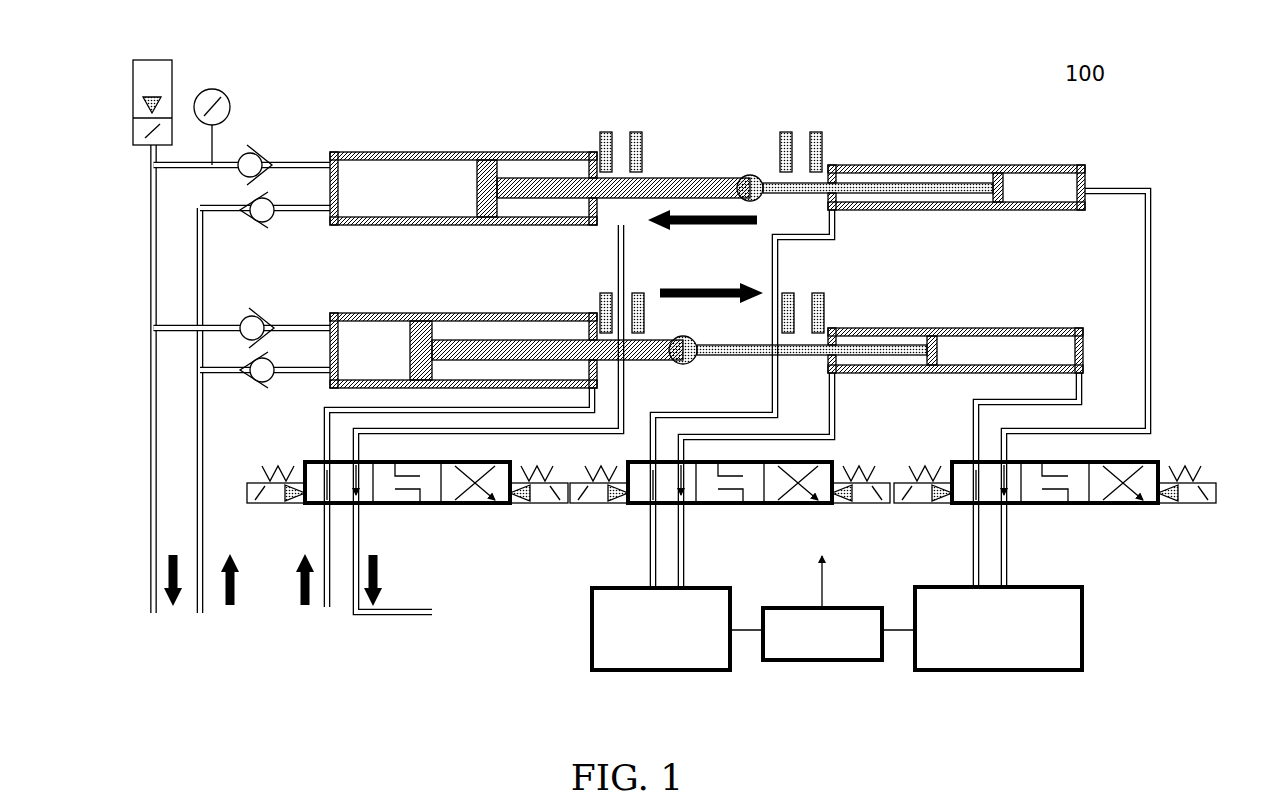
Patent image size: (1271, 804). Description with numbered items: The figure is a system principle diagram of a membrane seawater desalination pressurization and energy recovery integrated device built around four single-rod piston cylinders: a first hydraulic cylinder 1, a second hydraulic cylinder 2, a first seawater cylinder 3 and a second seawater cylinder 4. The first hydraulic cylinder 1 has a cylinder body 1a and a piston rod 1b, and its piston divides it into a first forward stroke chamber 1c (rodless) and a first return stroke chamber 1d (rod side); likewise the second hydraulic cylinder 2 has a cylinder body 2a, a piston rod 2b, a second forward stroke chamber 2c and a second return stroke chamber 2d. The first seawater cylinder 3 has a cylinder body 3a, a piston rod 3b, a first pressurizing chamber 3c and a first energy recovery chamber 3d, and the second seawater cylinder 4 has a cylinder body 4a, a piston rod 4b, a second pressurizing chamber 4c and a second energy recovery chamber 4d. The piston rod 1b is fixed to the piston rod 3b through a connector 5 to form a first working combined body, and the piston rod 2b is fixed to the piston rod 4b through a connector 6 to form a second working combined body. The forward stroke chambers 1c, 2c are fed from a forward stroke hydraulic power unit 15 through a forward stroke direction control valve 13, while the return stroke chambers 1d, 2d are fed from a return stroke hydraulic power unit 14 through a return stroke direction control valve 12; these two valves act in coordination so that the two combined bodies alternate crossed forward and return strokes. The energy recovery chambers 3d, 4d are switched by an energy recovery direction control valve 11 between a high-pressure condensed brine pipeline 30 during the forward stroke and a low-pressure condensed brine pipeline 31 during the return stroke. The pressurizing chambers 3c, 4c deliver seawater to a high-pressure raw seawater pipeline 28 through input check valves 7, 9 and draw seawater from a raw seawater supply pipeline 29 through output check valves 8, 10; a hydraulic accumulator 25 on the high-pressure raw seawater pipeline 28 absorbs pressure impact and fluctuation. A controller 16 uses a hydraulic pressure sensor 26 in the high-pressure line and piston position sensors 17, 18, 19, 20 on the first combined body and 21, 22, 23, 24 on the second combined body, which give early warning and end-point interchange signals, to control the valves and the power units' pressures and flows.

The first hydraulic cylinder 1 is at (924, 178).
The cylinder body 1a is at (1068, 165).
The piston rod 1b is at (870, 180).
The first forward stroke chamber 1c is at (1048, 195).
The first return stroke chamber 1d is at (886, 200).
The second hydraulic cylinder 2 is at (890, 340).
The cylinder body 2a is at (1070, 328).
The piston rod 2b is at (862, 345).
The second forward stroke chamber 2c is at (992, 345).
The second return stroke chamber 2d is at (905, 365).
The first seawater cylinder 3 is at (540, 180).
The cylinder body 3a is at (560, 152).
The piston rod 3b is at (472, 182).
The first pressurizing chamber 3c is at (398, 194).
The first energy recovery chamber 3d is at (560, 205).
The second seawater cylinder 4 is at (506, 327).
The cylinder body 4a is at (560, 313).
The piston rod 4b is at (405, 342).
The second pressurizing chamber 4c is at (356, 340).
The second energy recovery chamber 4d is at (538, 340).
The connector 5 is at (762, 157).
The connector 6 is at (690, 340).
The input check valve 7 is at (270, 152).
The output check valve 8 is at (243, 222).
The input check valve 9 is at (272, 308).
The output check valve 10 is at (245, 385).
The energy recovery direction control valve 11 is at (497, 508).
The return stroke direction control valve 12 is at (798, 510).
The forward stroke direction control valve 13 is at (1144, 508).
The return stroke hydraulic power unit 14 is at (661, 629).
The forward stroke hydraulic power unit 15 is at (998, 628).
The controller 16 is at (822, 634).
The piston position sensor 17 is at (604, 132).
The piston position sensor 18 is at (636, 132).
The piston position sensor 19 is at (784, 132).
The piston position sensor 20 is at (818, 132).
The piston position sensor 21 is at (606, 293).
The piston position sensor 22 is at (640, 293).
The piston position sensor 23 is at (786, 293).
The piston position sensor 24 is at (818, 293).
The hydraulic accumulator 25 is at (150, 128).
The hydraulic pressure sensor 26 is at (204, 90).
The high-pressure raw seawater pipeline 28 is at (152, 612).
The raw seawater supply pipeline 29 is at (200, 612).
The high-pressure condensed brine pipeline 30 is at (322, 607).
The low-pressure condensed brine pipeline 31 is at (392, 625).